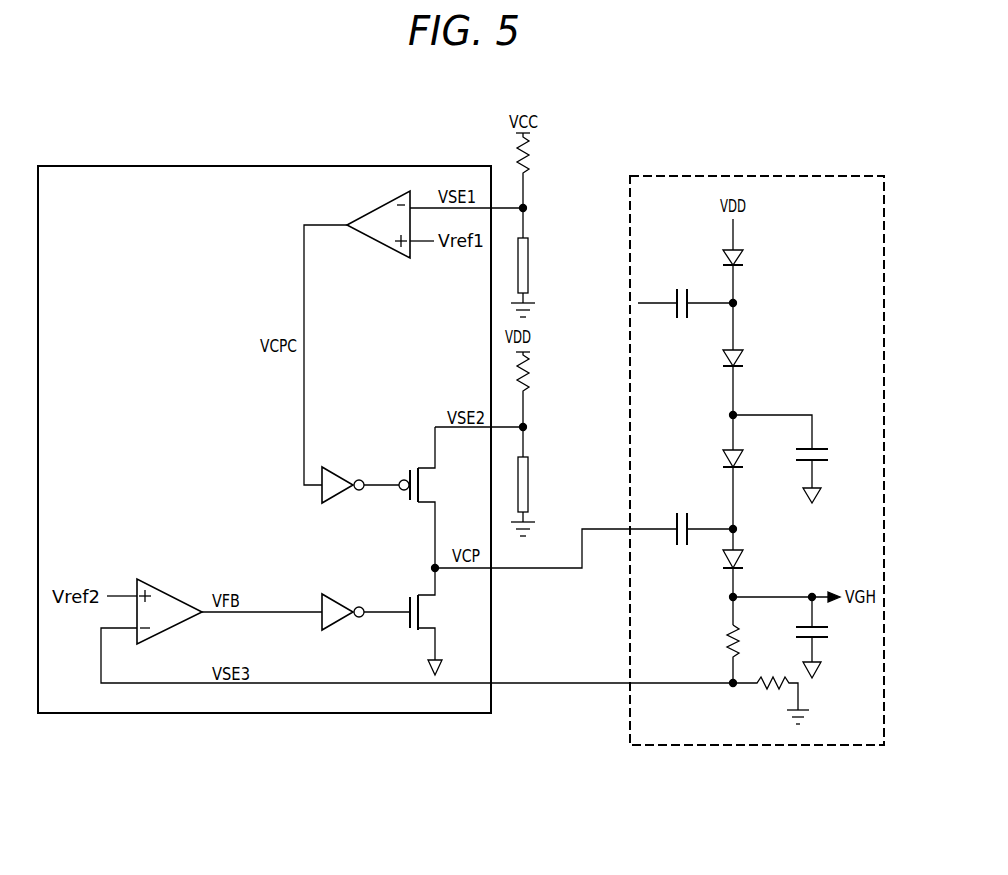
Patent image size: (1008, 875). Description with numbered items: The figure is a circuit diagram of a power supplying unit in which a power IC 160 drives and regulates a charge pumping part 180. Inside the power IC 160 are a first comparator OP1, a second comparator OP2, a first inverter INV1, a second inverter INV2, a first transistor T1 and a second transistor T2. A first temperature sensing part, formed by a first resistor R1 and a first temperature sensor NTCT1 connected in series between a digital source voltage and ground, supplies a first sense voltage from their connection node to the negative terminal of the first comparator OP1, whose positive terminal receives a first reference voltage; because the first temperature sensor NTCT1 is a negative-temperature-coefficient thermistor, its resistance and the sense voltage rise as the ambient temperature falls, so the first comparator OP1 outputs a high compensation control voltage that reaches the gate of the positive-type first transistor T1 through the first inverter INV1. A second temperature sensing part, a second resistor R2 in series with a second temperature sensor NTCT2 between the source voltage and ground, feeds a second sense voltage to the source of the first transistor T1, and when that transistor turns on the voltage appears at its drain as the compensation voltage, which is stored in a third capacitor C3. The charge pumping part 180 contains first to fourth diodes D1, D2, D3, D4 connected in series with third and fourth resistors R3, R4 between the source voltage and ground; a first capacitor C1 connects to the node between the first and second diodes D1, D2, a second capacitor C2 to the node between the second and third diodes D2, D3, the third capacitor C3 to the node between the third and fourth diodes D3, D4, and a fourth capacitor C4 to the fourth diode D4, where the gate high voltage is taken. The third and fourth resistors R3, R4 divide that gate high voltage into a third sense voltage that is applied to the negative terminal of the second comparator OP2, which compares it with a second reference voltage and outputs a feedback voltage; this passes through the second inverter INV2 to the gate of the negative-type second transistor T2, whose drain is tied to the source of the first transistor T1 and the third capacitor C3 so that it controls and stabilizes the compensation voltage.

The power IC 160 is at (265, 166).
The charge pumping part 180 is at (752, 176).
The first comparator OP1 is at (378, 243).
The second comparator OP2 is at (170, 592).
The first inverter INV1 is at (338, 470).
The second inverter INV2 is at (338, 594).
The first transistor T1 is at (426, 497).
The second transistor T2 is at (426, 621).
The first resistor R1 is at (536, 170).
The second resistor R2 is at (536, 389).
The third resistor R3 is at (722, 654).
The fourth resistor R4 is at (771, 690).
The first temperature sensor NTCT1 is at (547, 262).
The second temperature sensor NTCT2 is at (547, 481).
The first capacitor C1 is at (685, 289).
The second capacitor C2 is at (792, 459).
The third capacitor C3 is at (703, 542).
The fourth capacitor C4 is at (823, 637).
The first diode D1 is at (746, 259).
The second diode D2 is at (746, 359).
The third diode D3 is at (746, 460).
The fourth diode D4 is at (746, 562).